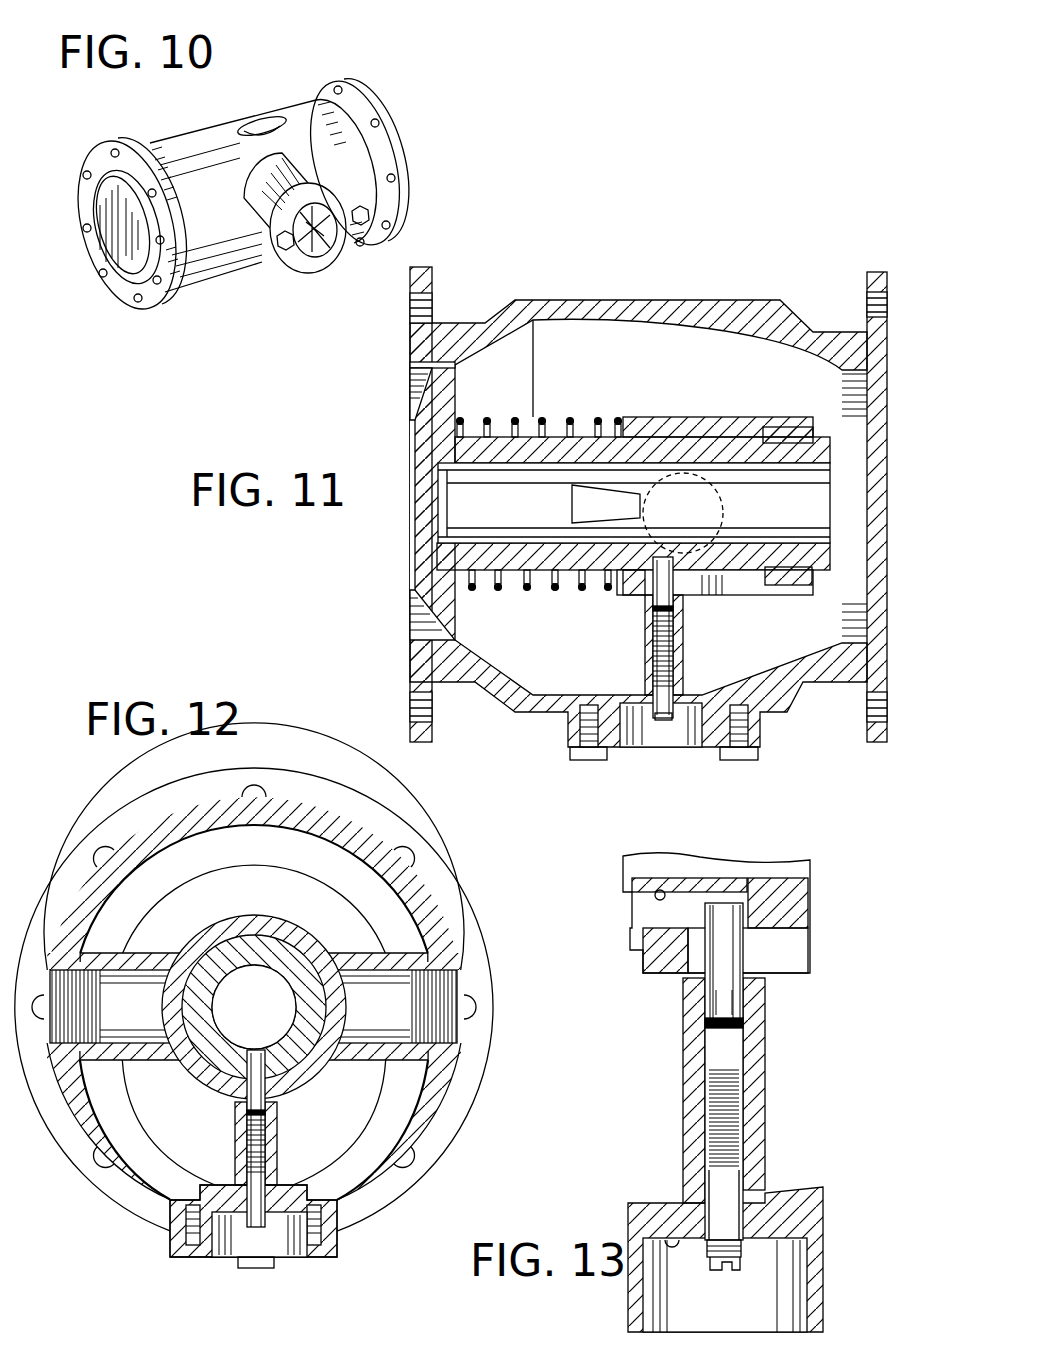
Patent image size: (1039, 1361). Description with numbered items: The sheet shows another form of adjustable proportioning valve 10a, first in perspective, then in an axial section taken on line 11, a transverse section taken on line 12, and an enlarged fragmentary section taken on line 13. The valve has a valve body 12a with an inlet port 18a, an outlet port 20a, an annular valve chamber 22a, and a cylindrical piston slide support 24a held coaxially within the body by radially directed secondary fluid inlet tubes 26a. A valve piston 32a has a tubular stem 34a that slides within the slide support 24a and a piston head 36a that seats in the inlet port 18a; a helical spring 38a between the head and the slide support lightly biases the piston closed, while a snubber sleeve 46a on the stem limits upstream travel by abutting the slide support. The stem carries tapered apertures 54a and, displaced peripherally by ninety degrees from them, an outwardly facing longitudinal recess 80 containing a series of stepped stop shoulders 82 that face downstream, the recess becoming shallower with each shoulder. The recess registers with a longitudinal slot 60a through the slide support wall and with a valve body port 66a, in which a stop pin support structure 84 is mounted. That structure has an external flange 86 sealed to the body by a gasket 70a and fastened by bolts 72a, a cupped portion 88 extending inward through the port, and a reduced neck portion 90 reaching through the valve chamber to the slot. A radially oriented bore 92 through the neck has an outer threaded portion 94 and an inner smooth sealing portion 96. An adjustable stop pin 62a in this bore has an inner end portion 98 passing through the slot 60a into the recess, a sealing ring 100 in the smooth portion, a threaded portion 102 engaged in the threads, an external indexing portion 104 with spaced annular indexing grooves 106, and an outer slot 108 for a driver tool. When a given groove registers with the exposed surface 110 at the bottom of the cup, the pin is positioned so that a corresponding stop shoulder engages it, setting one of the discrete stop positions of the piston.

In FIG. 10, the adjustable proportioning valve 10a is at (270, 88).
In FIG. 11, the adjustable proportioning valve 10a is at (648, 486).
In FIG. 12, the adjustable proportioning valve 10a is at (254, 971).
In FIG. 10, the valve body 12a is at (238, 196).
In FIG. 11, the valve body 12a is at (557, 300).
In FIG. 12, the valve body 12a is at (328, 815).
In FIG. 11, the inlet port 18a is at (420, 373).
In FIG. 11, the outlet port 20a is at (842, 376).
In FIG. 11, the annular valve chamber 22a is at (575, 344).
In FIG. 11, the cylindrical piston slide support 24a is at (692, 417).
In FIG. 12, the cylindrical piston slide support 24a is at (247, 916).
In FIG. 13, the cylindrical piston slide support 24a is at (643, 962).
In FIG. 10, the secondary fluid inlet tubes 26a is at (258, 118).
In FIG. 11, the secondary fluid inlet tubes 26a is at (720, 498).
In FIG. 12, the secondary fluid inlet tubes 26a is at (128, 962).
In FIG. 10, the valve piston 32a is at (108, 208).
In FIG. 11, the valve piston 32a is at (436, 508).
In FIG. 12, the valve piston 32a is at (288, 940).
In FIG. 13, the valve piston 32a is at (812, 900).
In FIG. 11, the tubular stem 34a is at (478, 450).
In FIG. 12, the tubular stem 34a is at (225, 950).
In FIG. 13, the tubular stem 34a is at (785, 890).
In FIG. 11, the piston head 36a is at (432, 592).
In FIG. 12, the piston head 36a is at (161, 935).
In FIG. 11, the helical spring 38a is at (543, 418).
In FIG. 11, the snubber sleeve 46a is at (797, 575).
In FIG. 11, the tapered apertures 54a is at (582, 492).
In FIG. 11, the longitudinal slot 60a is at (733, 588).
In FIG. 12, the longitudinal slot 60a is at (267, 1092).
In FIG. 13, the longitudinal slot 60a is at (790, 964).
In FIG. 10, the adjustable stop pin 62a is at (322, 240).
In FIG. 11, the adjustable stop pin 62a is at (675, 643).
In FIG. 12, the adjustable stop pin 62a is at (266, 1232).
In FIG. 13, the adjustable stop pin 62a is at (747, 1106).
In FIG. 11, the valve body port 66a is at (692, 720).
In FIG. 12, the valve body port 66a is at (207, 1200).
In FIG. 11, the gasket 70a is at (605, 715).
In FIG. 12, the gasket 70a is at (190, 1230).
In FIG. 11, the bolts 72a is at (588, 760).
In FIG. 12, the bolts 72a is at (250, 1268).
In FIG. 11, the longitudinal recess 80 is at (660, 552).
In FIG. 12, the longitudinal recess 80 is at (254, 1007).
In FIG. 13, the longitudinal recess 80 is at (661, 890).
In FIG. 11, the stepped stop shoulders 82 is at (612, 580).
In FIG. 10, the stop pin support structure 84 is at (288, 268).
In FIG. 11, the stop pin support structure 84 is at (642, 647).
In FIG. 12, the stop pin support structure 84 is at (280, 1165).
In FIG. 13, the stop pin support structure 84 is at (681, 1130).
In FIG. 11, the external flange 86 is at (758, 752).
In FIG. 12, the external flange 86 is at (338, 1248).
In FIG. 11, the cupped portion 88 is at (612, 720).
In FIG. 12, the cupped portion 88 is at (300, 1222).
In FIG. 13, the cupped portion 88 is at (818, 1273).
In FIG. 11, the reduced neck portion 90 is at (684, 623).
In FIG. 12, the reduced neck portion 90 is at (278, 1113).
In FIG. 13, the reduced neck portion 90 is at (766, 1075).
In FIG. 11, the radially oriented bore 92 is at (652, 627).
In FIG. 12, the radially oriented bore 92 is at (250, 1165).
In FIG. 13, the radially oriented bore 92 is at (703, 1087).
In FIG. 13, the outer threaded portion 94 is at (742, 1140).
In FIG. 13, the inner smooth sealing portion 96 is at (740, 1003).
In FIG. 11, the inner end portion 98 is at (668, 558).
In FIG. 12, the inner end portion 98 is at (246, 1066).
In FIG. 13, the inner end portion 98 is at (725, 903).
In FIG. 11, the sealing ring 100 is at (652, 609).
In FIG. 12, the sealing ring 100 is at (247, 1112).
In FIG. 13, the sealing ring 100 is at (704, 1022).
In FIG. 11, the threaded portion 102 is at (652, 657).
In FIG. 12, the threaded portion 102 is at (260, 1137).
In FIG. 13, the threaded portion 102 is at (708, 1146).
In FIG. 11, the external indexing portion 104 is at (681, 722).
In FIG. 12, the external indexing portion 104 is at (246, 1220).
In FIG. 13, the external indexing portion 104 is at (700, 1255).
In FIG. 13, the indexing grooves 106 is at (745, 1236).
In FIG. 13, the slot 108 is at (728, 1266).
In FIG. 13, the exposed surface 110 is at (670, 1235).
In FIG. 10, the section line 11— 11 is at (100, 268).
In FIG. 11, the section line 12— 12 is at (670, 335).
In FIG. 12, the section line 13— 13 is at (263, 1050).